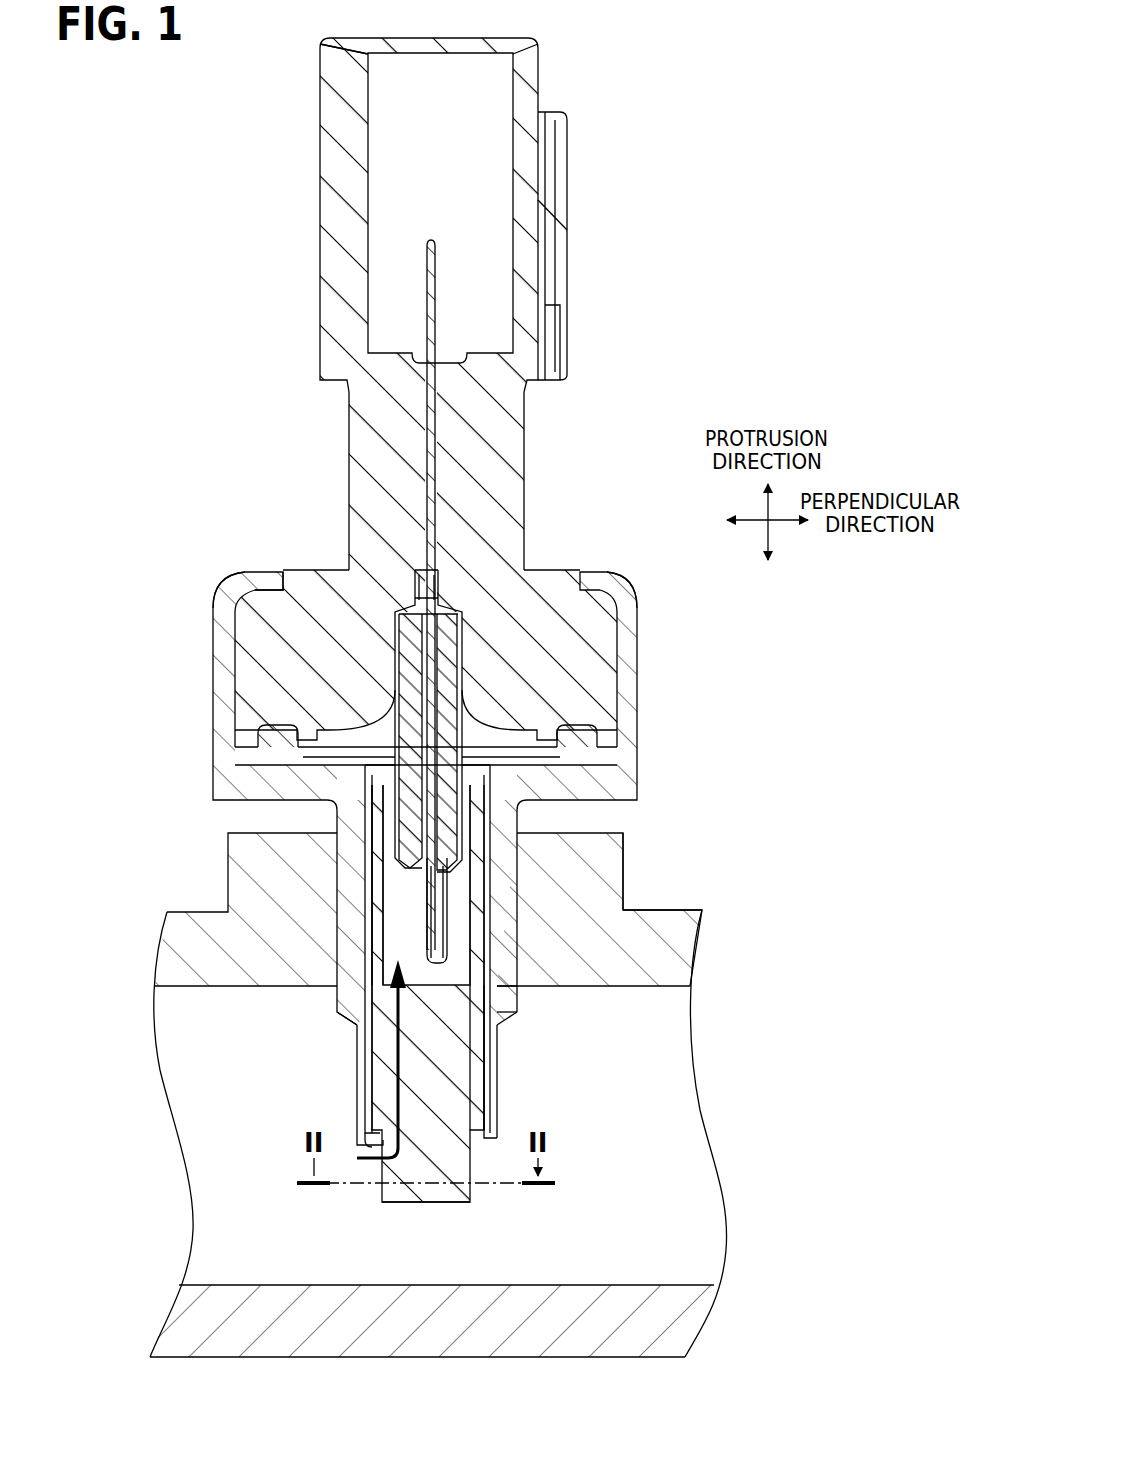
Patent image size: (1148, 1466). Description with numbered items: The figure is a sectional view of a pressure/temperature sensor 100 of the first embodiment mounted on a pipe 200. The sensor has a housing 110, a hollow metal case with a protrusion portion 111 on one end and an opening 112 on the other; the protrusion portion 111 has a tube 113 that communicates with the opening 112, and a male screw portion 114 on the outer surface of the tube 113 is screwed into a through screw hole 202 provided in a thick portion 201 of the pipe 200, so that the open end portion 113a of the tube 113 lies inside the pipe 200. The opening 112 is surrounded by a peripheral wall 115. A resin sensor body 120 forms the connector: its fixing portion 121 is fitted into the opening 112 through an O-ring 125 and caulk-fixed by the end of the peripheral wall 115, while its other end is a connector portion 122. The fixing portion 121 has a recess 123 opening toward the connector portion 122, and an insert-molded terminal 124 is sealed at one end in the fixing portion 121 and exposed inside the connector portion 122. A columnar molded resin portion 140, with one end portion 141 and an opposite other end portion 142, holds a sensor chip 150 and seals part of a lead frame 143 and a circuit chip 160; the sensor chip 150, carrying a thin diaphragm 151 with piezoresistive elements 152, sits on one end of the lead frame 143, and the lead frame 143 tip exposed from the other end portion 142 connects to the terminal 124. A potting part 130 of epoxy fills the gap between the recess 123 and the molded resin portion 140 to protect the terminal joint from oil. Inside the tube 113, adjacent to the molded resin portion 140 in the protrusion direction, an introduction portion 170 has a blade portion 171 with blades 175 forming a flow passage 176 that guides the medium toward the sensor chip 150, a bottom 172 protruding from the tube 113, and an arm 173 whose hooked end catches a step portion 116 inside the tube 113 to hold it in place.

The pressure/temperature sensor 100 is at (322, 140).
The housing 110 is at (232, 742).
The protrusion portion 111 is at (497, 1100).
The opening 112 is at (625, 628).
The tube 113 is at (545, 975).
The open end portion 113a is at (357, 1143).
The male screw portion 114 is at (540, 935).
The peripheral wall 115 is at (215, 604).
The step portion 116 is at (485, 800).
The sensor body 120 is at (526, 458).
The fixing portion 121 is at (585, 690).
The connector portion 122 is at (345, 192).
The recess 123 is at (470, 612).
The terminal 124 is at (430, 312).
The O-ring 125 is at (465, 745).
The potting part 130 is at (350, 740).
The molded resin portion 140 is at (368, 840).
The one end portion 141 is at (362, 868).
The other end portion 142 is at (300, 570).
The lead frame 143 is at (340, 812).
The sensor chip 150 is at (455, 850).
The diaphragm 151 is at (430, 882).
The piezoresistive elements 152 is at (428, 925).
The circuit chip 160 is at (458, 762).
The introduction portion 170 is at (476, 1200).
The blade portion 171 is at (470, 1085).
The bottom 172 is at (428, 1204).
The arm 173 is at (478, 878).
The blades 175 is at (385, 1040).
The flow passage 176 is at (400, 1070).
The pipe 200 is at (195, 1322).
The thick portion 201 is at (625, 850).
The through screw hole 202 is at (610, 905).